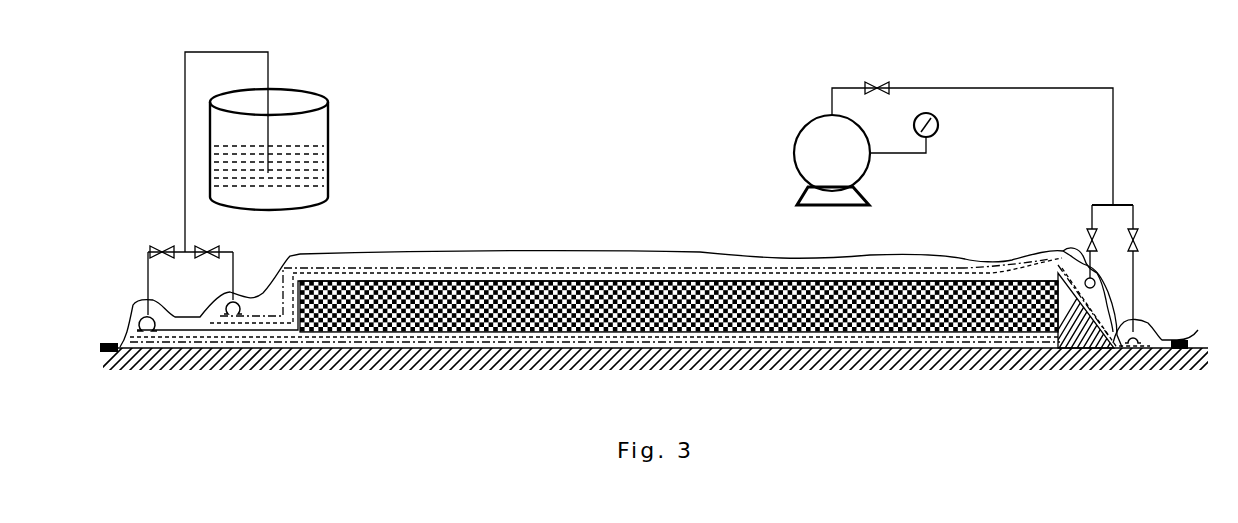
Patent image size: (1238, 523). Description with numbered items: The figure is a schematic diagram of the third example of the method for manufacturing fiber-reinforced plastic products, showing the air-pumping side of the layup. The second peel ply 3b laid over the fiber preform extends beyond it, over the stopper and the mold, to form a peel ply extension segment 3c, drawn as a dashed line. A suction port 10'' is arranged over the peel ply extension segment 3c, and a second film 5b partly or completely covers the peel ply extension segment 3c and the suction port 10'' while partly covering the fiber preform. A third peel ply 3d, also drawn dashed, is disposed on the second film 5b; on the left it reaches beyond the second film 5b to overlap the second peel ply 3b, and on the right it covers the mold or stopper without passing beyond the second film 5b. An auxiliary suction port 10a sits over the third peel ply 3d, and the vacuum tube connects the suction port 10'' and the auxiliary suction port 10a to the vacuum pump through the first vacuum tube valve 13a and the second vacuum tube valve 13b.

The second peel ply 3b is at (786, 268).
The third peel ply 3d is at (1030, 264).
The auxiliary suction port 10a is at (1083, 278).
The second vacuum tube valve 13b is at (1090, 228).
The first vacuum tube valve 13a is at (1138, 228).
The second film 5b is at (1084, 337).
The peel ply extension segment 3c is at (1123, 350).
The suction port 10'' is at (1162, 397).